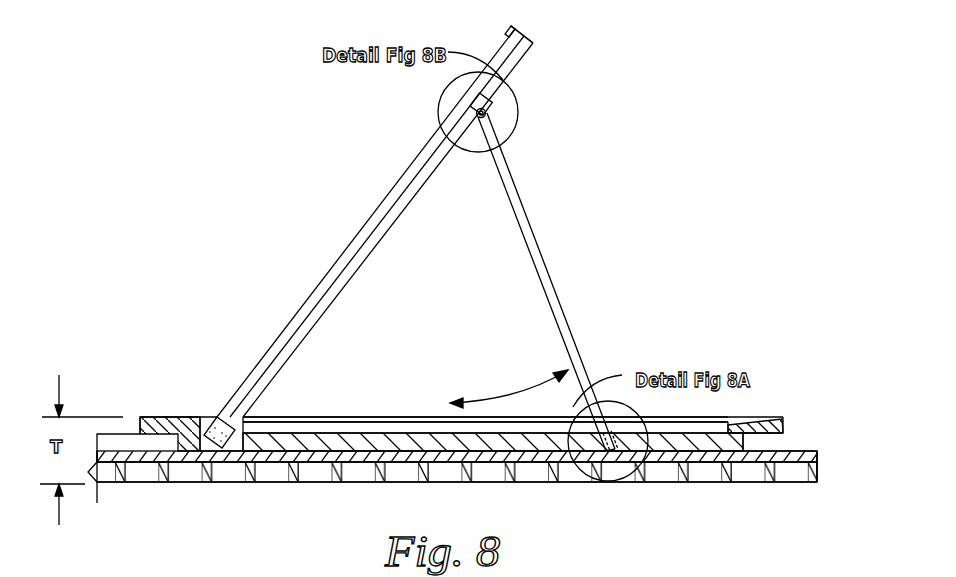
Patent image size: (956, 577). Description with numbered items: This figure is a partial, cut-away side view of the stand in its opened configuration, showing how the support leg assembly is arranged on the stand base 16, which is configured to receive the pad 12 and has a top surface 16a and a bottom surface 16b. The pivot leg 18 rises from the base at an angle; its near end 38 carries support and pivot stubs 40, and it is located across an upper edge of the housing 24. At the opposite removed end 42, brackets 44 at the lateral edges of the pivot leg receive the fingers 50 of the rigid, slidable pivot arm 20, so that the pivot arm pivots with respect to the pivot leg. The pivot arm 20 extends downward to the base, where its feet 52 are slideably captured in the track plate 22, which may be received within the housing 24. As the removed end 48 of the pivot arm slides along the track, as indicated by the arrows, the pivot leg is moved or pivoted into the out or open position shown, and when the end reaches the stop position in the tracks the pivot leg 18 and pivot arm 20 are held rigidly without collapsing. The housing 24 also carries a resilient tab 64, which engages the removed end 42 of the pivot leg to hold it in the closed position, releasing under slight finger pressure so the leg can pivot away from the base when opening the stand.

The pad 12 is at (288, 483).
The stand base 16 is at (136, 446).
The top surface 16a is at (444, 482).
The bottom surface 16b is at (793, 452).
The pivot leg 18 is at (375, 222).
The pivot arm 20 is at (550, 268).
The track plate 22 is at (323, 440).
The housing 24 is at (147, 416).
The near end 38 is at (207, 448).
The support and pivot stubs 40 is at (212, 413).
The removed end 42 is at (548, 42).
The brackets 44 is at (493, 111).
The removed end 48 is at (481, 128).
The fingers 50 is at (490, 106).
The feet 52 is at (582, 465).
The resilient tab 64 is at (768, 414).